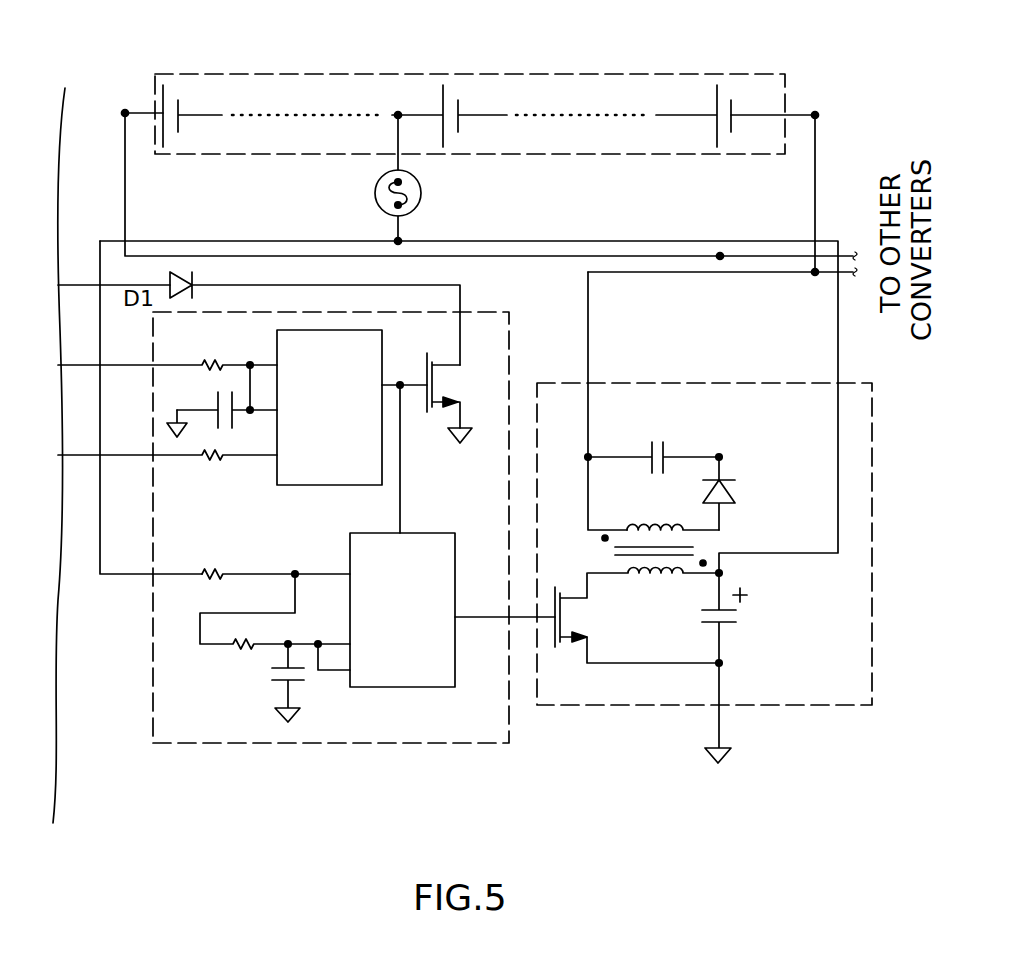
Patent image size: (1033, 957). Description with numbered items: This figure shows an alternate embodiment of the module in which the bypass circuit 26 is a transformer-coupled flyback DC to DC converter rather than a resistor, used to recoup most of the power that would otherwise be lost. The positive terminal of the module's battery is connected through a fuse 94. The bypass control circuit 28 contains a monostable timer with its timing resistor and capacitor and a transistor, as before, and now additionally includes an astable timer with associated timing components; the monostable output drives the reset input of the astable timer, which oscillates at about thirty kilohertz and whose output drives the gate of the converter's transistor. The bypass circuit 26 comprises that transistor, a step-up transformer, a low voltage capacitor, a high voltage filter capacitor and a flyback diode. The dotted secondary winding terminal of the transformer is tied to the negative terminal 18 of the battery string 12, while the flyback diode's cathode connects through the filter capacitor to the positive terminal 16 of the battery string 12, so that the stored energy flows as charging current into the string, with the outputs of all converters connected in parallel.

The battery string 12 is at (523, 73).
The positive terminal 16 is at (125, 113).
The negative terminal 18 is at (815, 115).
The fuse 94 is at (375, 201).
The bypass circuit 26 is at (585, 707).
The bypass control circuit 28 is at (212, 743).